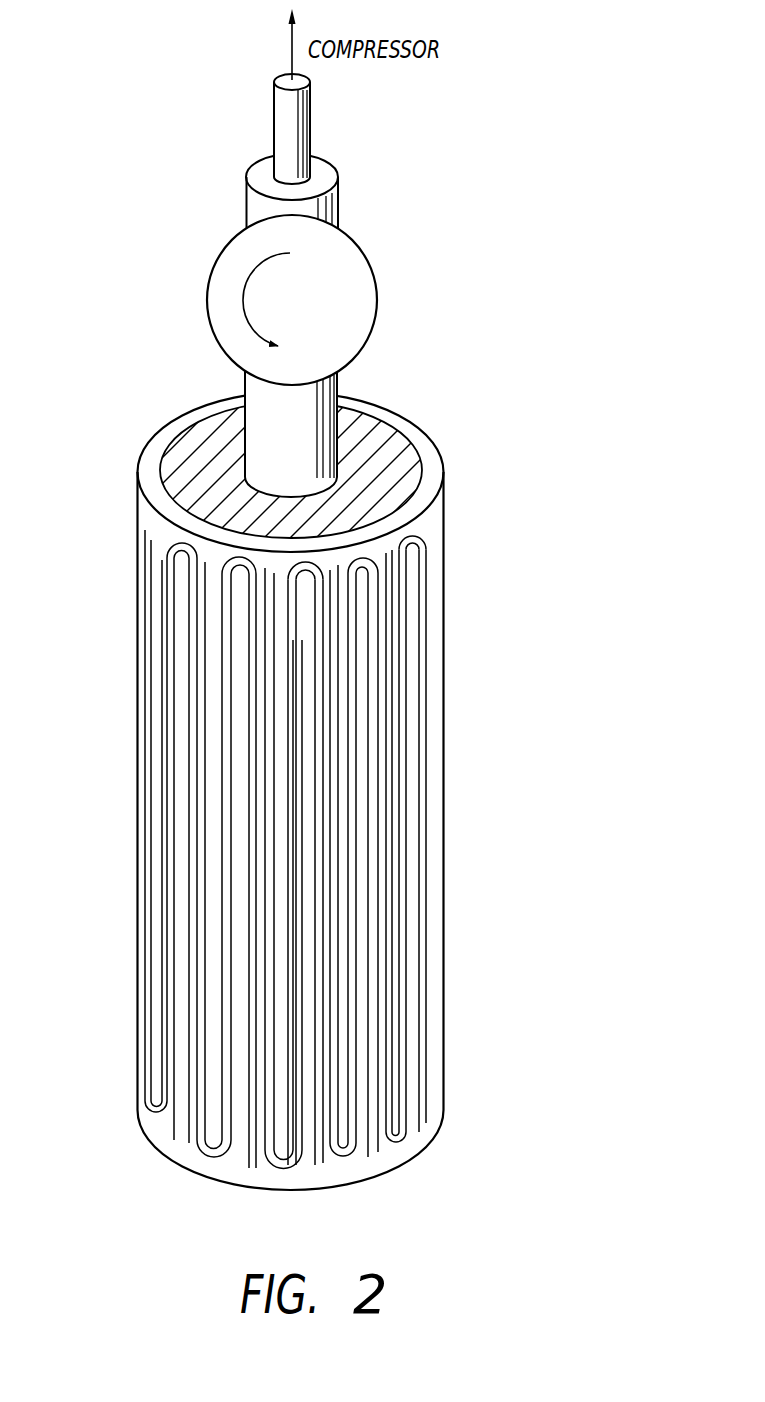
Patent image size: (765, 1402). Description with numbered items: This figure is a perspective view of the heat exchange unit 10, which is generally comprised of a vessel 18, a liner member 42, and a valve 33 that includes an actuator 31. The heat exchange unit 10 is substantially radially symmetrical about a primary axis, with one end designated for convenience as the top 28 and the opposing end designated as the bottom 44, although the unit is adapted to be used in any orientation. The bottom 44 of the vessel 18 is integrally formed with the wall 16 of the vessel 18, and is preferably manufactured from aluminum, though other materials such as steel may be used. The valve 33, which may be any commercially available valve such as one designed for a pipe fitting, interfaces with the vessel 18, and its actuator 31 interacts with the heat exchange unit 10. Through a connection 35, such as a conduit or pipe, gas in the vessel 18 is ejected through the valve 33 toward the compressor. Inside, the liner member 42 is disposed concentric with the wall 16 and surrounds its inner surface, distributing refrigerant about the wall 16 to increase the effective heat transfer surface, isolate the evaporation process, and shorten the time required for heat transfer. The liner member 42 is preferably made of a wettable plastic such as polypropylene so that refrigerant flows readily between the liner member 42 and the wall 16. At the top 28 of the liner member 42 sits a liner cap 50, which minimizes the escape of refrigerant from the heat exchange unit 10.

The heat exchange unit 10 is at (576, 628).
The wall 16 is at (444, 757).
The vessel 18 is at (138, 950).
The top 28 is at (198, 491).
The actuator 31 is at (335, 267).
The valve 33 is at (360, 377).
The connection 35 is at (267, 423).
The liner member 42 is at (413, 866).
The bottom 44 is at (361, 1187).
The liner cap 50 is at (377, 465).